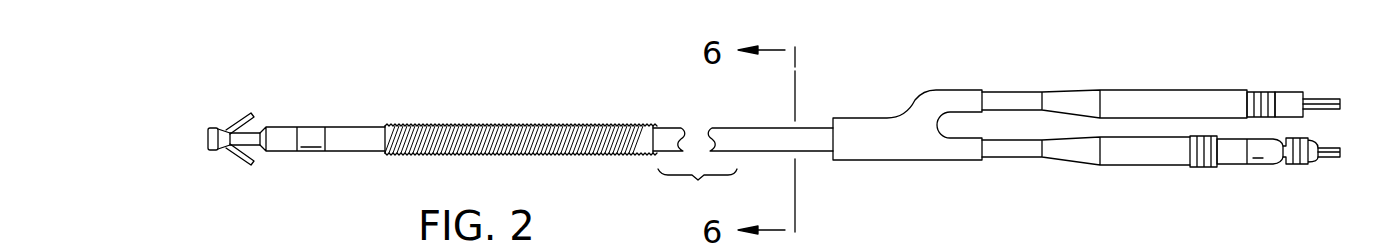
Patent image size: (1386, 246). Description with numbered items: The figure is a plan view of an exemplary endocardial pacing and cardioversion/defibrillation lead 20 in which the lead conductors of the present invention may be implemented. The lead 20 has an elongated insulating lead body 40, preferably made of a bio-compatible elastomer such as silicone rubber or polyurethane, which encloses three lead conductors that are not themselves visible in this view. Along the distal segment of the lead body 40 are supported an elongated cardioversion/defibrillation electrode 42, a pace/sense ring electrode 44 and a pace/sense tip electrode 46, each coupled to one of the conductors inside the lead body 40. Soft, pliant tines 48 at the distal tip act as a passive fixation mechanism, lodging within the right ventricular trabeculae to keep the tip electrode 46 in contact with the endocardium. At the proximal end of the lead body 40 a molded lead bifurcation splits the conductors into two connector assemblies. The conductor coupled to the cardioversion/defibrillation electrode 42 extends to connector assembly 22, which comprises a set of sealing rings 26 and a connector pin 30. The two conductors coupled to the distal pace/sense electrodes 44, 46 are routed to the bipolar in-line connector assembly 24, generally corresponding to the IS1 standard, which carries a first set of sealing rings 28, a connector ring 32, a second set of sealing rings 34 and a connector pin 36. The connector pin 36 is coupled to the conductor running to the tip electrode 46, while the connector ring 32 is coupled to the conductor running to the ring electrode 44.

The cardioversion/defibrillation lead 20 is at (870, 86).
The connector assembly 22 is at (1145, 98).
The bipolar in-line connector assembly 24 is at (1120, 160).
The sealing rings 26 is at (1262, 90).
The first set of sealing rings 28 is at (1207, 167).
The connector pin 30 is at (1318, 100).
The connector ring 32 is at (1263, 164).
The second set of sealing rings 34 is at (1295, 164).
The connector pin 36 is at (1333, 157).
The lead body 40 is at (663, 127).
The cardioversion/defibrillation electrode 42 is at (427, 132).
The pace/sense ring electrode 44 is at (310, 137).
The pace/sense tip electrode 46 is at (207, 138).
The tines 48 is at (233, 115).